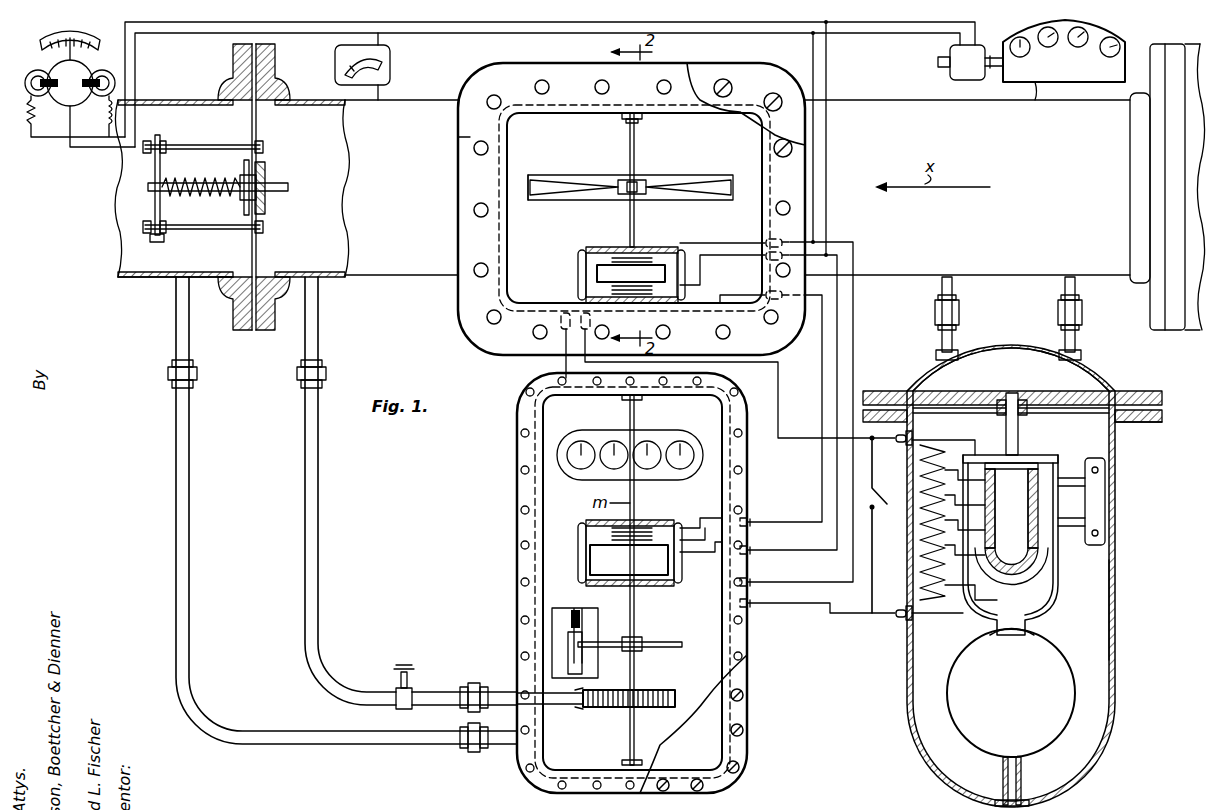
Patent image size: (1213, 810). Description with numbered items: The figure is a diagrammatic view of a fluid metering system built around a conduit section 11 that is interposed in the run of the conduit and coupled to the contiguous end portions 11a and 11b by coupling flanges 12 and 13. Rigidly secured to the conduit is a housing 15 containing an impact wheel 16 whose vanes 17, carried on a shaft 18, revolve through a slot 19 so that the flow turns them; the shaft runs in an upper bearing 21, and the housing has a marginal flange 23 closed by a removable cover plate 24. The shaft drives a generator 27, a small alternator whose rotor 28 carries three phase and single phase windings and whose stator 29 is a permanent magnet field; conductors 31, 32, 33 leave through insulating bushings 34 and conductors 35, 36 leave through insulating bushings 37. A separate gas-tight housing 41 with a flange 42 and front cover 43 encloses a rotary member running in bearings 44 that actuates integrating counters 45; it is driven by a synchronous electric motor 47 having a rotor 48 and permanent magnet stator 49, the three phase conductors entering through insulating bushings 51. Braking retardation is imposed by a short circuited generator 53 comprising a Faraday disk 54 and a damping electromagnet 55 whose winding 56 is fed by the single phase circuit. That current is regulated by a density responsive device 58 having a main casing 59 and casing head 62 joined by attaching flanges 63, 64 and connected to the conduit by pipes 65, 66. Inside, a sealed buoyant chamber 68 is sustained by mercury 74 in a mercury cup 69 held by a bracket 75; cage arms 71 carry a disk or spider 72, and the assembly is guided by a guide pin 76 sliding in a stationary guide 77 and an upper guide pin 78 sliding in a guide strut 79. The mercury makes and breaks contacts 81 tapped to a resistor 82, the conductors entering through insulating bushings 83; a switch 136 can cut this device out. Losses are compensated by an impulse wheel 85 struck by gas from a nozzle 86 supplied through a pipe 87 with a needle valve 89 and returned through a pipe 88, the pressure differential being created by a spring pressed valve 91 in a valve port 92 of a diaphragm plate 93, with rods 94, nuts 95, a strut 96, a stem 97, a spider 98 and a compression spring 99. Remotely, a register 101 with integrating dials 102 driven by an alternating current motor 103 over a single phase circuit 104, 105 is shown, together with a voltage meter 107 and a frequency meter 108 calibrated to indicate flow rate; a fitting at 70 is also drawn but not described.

The conduit section 11 is at (410, 178).
The contiguous end portion 11a is at (1200, 158).
The contiguous end portion 11b is at (140, 277).
The coupling flanges 12 is at (1176, 192).
The coupling flanges 13 is at (260, 331).
The housing 15 is at (553, 130).
The impact wheel 16 is at (625, 182).
The vanes 17 is at (565, 186).
The shaft 18 is at (640, 143).
The slot 19 is at (545, 200).
The upper bearing 21 is at (622, 117).
The marginal flange 23 is at (458, 137).
The cover plate 24 is at (735, 115).
The generator 27 is at (592, 244).
The rotor 28 is at (607, 262).
The stator 29 is at (672, 262).
The conductor 31 is at (853, 305).
The conductor 32 is at (838, 325).
The conductor 33 is at (822, 347).
The insulating bushings 34 is at (760, 240).
The conductor 35 is at (780, 378).
The conductor 36 is at (560, 363).
The insulating bushings 37 is at (559, 333).
The housing 41 is at (543, 510).
The front marginal flange 42 is at (520, 570).
The front cover 43 is at (705, 722).
The bearings 44 is at (636, 400).
The integrating counters 45 is at (608, 468).
The electric motor 47 is at (668, 522).
The rotor 48 is at (605, 556).
The stator 49 is at (598, 575).
The insulating bushings 51 is at (752, 540).
The short circuited generator 53 is at (540, 616).
The Faraday disk 54 is at (675, 647).
The damping electromagnet 55 is at (560, 655).
The winding 56 is at (582, 622).
The density responsive device 58 is at (1125, 568).
The main casing 59 is at (1113, 626).
The casing head 62 is at (1012, 346).
The attaching flange 63 is at (1157, 423).
The attaching flange 64 is at (1160, 396).
The pipe 65 is at (1080, 336).
The pipe 66 is at (952, 336).
The hermetically sealed chamber 68 is at (1065, 690).
The mercury cup 69 is at (1036, 562).
The drain tube 70 is at (1003, 775).
The arms 71 is at (1050, 600).
The disk or spider 72 is at (1040, 457).
The mercury 74 is at (1038, 525).
The bracket 75 is at (1076, 490).
The guide pin 76 is at (1012, 393).
The stationary guide 77 is at (1021, 778).
The upper guide pin 78 is at (1018, 512).
The guide strut 79 is at (1022, 406).
The contacts 81 is at (993, 500).
The resistor 82 is at (920, 515).
The insulating bushings 83 is at (903, 443).
The impulse wheel 85 is at (660, 698).
The nozzle 86 is at (570, 706).
The pipe 87 is at (335, 680).
The pipe 88 is at (268, 731).
The needle valve 89 is at (407, 684).
The spring pressed valve 91 is at (245, 165).
The valve port 92 is at (265, 168).
The diaphragm plate 93 is at (262, 126).
The rods 94 is at (181, 145).
The nuts 95 is at (158, 240).
The strut 96 is at (155, 208).
The stem 97 is at (218, 181).
The spider 98 is at (265, 205).
The compression spring 99 is at (222, 196).
The remote register 101 is at (1035, 100).
The integrating dials 102 is at (1078, 47).
The alternating current motor 103 is at (970, 82).
The single phase circuit conductor 104 is at (487, 34).
The single phase circuit conductor 105 is at (520, 24).
The voltage meter 107 is at (378, 88).
The frequency meter 108 is at (62, 118).
The switch 136 is at (889, 525).